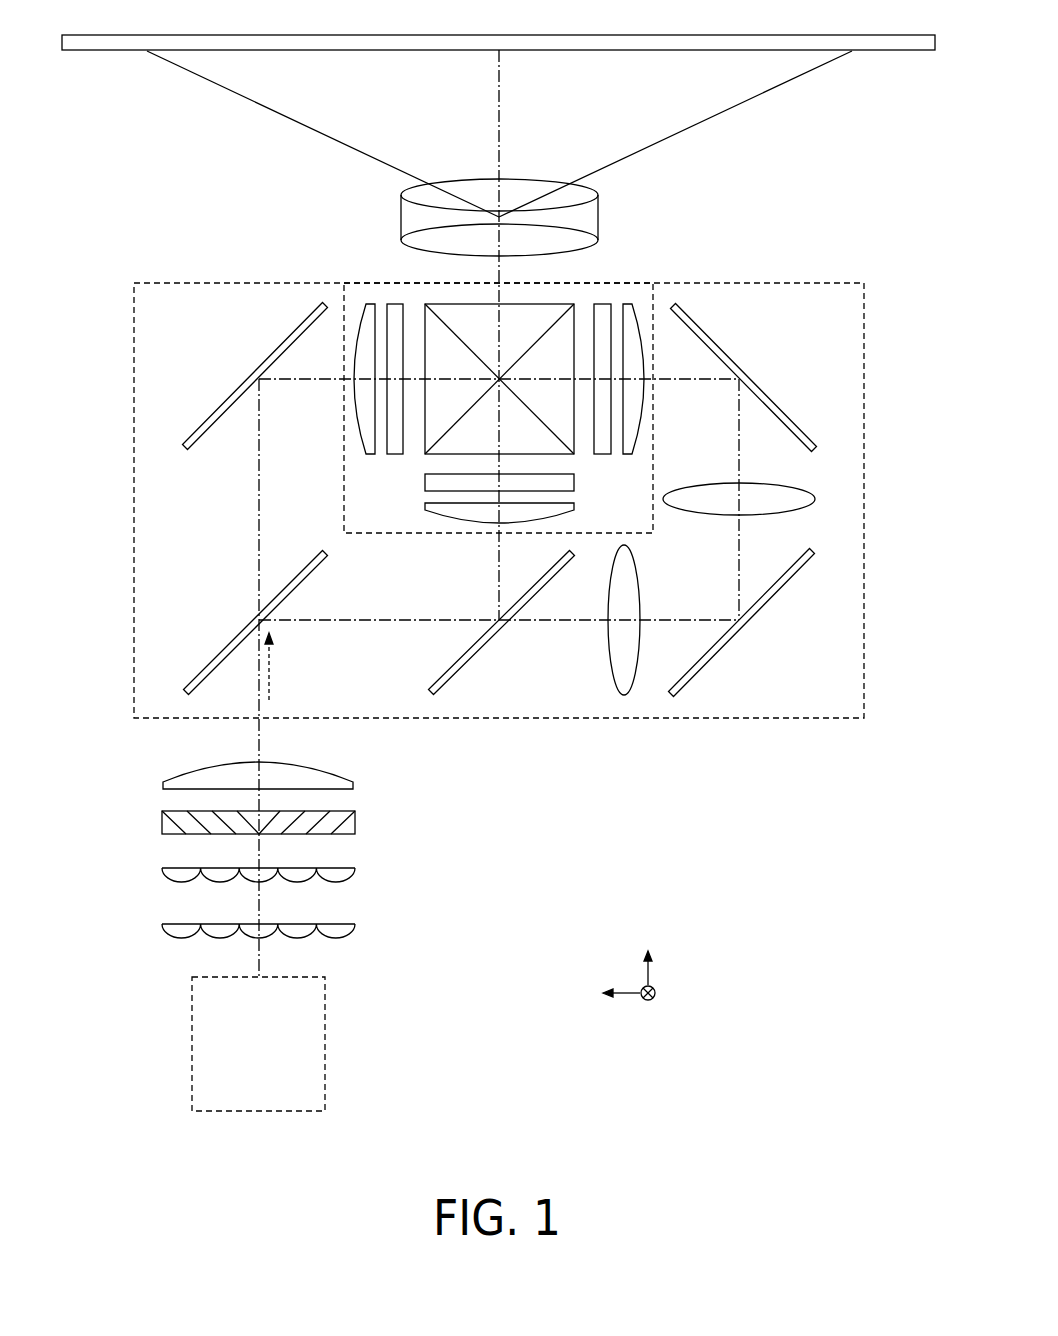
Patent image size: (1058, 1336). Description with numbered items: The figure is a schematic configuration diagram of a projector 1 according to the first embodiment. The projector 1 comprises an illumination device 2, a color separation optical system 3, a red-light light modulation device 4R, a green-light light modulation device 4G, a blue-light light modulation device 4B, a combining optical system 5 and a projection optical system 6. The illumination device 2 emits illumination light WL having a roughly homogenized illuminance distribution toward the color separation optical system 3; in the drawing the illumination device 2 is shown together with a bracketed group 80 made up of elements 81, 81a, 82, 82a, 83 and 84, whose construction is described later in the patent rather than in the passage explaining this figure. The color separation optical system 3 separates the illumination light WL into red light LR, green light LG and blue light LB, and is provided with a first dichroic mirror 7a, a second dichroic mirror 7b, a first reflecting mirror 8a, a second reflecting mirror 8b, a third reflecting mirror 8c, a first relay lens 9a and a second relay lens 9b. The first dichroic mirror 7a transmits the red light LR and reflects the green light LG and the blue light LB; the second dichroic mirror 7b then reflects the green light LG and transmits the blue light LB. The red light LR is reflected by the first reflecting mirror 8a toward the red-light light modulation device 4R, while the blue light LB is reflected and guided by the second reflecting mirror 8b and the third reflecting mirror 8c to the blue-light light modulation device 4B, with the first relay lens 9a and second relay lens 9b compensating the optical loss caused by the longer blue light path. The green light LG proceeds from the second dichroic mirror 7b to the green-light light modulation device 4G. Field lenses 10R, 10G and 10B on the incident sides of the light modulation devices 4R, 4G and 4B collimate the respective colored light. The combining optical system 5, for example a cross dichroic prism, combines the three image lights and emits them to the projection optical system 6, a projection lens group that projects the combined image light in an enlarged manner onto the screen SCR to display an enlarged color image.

The projector 1 is at (870, 260).
The illumination device 2 is at (326, 1040).
The color separation optical system 3 is at (134, 441).
The red-light light modulation device 4R is at (397, 302).
The green-light light modulation device 4G is at (428, 483).
The blue-light light modulation device 4B is at (602, 302).
The combining optical system 5 is at (528, 312).
The projection optical system 6 is at (478, 190).
The first dichroic mirror 7a is at (215, 653).
The second dichroic mirror 7b is at (476, 656).
The first reflecting mirror 8a is at (229, 395).
The second reflecting mirror 8b is at (768, 604).
The third reflecting mirror 8c is at (773, 398).
The first relay lens 9a is at (612, 645).
The second relay lens 9b is at (805, 490).
The field lens 10R is at (369, 303).
The field lens 10G is at (432, 507).
The field lens 10B is at (630, 303).
The illumination device 80 is at (455, 750).
The first lens array 81 is at (357, 933).
The first lenslet 81a is at (170, 933).
The second lens array 82 is at (357, 880).
The second lenslet 82a is at (170, 877).
The polarization conversion element 83 is at (345, 809).
The superimposing lens 84 is at (327, 772).
The screen SCR is at (898, 52).
The illumination light WL is at (273, 680).
The red light LR is at (258, 522).
The green light LG is at (499, 572).
The blue light LB is at (739, 562).